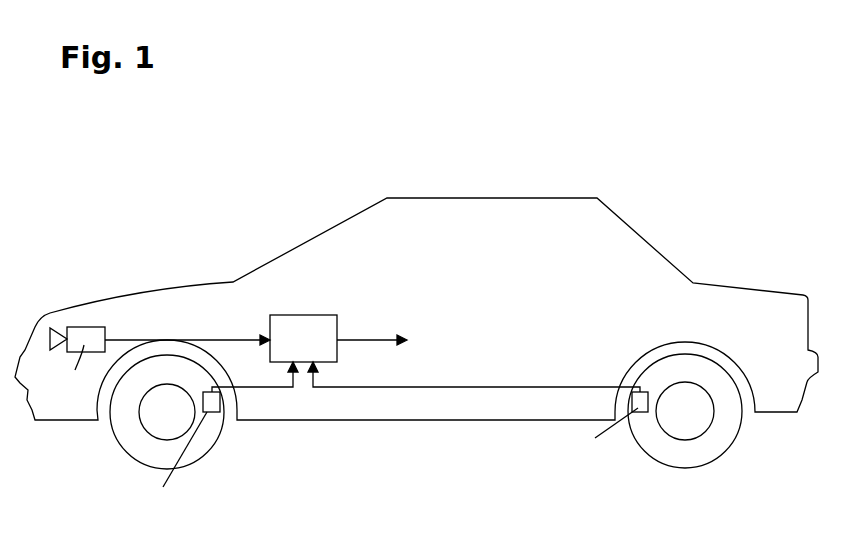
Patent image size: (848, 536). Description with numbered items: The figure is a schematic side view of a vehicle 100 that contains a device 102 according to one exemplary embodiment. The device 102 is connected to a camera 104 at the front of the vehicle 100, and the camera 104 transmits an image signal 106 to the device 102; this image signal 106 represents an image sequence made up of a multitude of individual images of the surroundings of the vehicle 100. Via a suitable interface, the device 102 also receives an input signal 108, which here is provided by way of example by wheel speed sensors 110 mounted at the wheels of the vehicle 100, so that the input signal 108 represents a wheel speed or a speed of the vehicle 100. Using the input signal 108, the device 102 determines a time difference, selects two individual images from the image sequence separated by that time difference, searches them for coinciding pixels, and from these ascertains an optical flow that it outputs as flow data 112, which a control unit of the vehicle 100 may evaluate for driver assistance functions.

The vehicle 100 is at (488, 197).
The device 102 is at (297, 315).
The camera 104 is at (80, 327).
The image signal 106 is at (137, 340).
The input signal 108 is at (278, 390).
The wheel speed sensors 110 is at (210, 412).
The flow data 112 is at (370, 339).